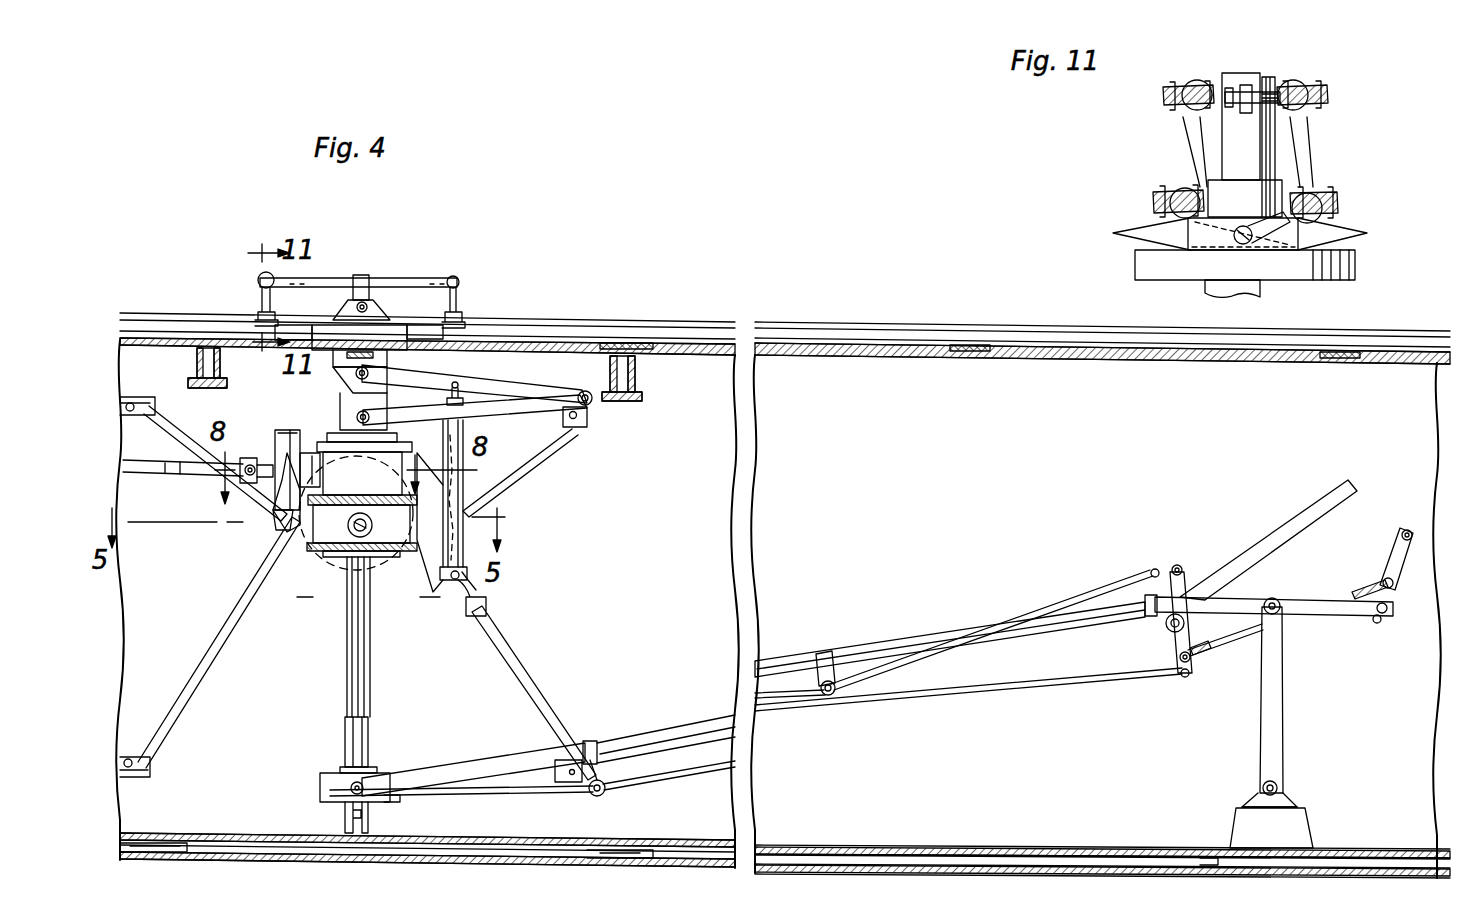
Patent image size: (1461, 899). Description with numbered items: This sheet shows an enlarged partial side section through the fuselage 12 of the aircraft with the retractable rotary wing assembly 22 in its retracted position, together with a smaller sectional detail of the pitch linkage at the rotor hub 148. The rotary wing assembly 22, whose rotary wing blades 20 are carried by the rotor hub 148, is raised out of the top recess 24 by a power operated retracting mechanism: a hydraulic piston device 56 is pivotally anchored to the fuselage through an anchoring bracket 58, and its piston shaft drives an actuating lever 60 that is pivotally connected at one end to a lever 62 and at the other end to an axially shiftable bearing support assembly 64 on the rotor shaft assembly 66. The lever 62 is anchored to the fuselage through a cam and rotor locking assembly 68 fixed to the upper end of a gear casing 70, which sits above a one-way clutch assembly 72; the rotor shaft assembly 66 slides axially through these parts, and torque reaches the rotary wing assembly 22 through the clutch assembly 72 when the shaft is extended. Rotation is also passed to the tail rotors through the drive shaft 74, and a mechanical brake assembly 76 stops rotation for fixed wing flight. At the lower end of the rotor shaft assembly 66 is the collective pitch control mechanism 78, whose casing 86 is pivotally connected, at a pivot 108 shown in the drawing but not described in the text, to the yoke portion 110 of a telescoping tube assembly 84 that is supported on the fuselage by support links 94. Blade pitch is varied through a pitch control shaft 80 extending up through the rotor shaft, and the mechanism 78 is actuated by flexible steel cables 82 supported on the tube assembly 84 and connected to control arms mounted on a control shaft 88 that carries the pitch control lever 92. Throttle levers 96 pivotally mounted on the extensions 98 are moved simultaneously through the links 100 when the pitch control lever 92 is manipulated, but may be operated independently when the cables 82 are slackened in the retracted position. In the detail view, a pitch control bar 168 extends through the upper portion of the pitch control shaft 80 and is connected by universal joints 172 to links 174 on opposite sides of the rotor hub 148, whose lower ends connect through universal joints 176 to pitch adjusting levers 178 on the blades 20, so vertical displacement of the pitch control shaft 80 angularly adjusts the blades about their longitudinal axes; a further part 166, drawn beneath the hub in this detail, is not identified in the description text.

In FIG. 4, the fuselage 12 is at (850, 343).
In FIG. 4, the rotary wing blades 20 is at (544, 323).
In FIG. 11, the rotary wing blades 20 is at (1332, 236).
In FIG. 4, the rotary wing assembly 22 is at (432, 270).
In FIG. 4, the top recess 24 is at (683, 323).
In FIG. 4, the hydraulic piston device 56 is at (458, 478).
In FIG. 4, the anchoring bracket 58 is at (427, 563).
In FIG. 4, the actuating lever 60 is at (505, 388).
In FIG. 4, the lever 62 is at (520, 403).
In FIG. 4, the bearing support assembly 64 is at (342, 372).
In FIG. 4, the rotor shaft assembly 66 is at (344, 654).
In FIG. 4, the cam and rotor locking assembly 68 is at (346, 412).
In FIG. 4, the gear casing 70 is at (347, 480).
In FIG. 4, the one-way clutch assembly 72 is at (340, 480).
In FIG. 4, the drive shaft 74 is at (186, 478).
In FIG. 4, the mechanical brake assembly 76 is at (282, 437).
In FIG. 4, the collective pitch control mechanism 78 is at (320, 782).
In FIG. 4, the pitch control shaft 80 is at (367, 290).
In FIG. 11, the pitch control shaft 80 is at (1248, 78).
In FIG. 4, the flexible steel cables 82 is at (495, 790).
In FIG. 4, the telescoping tube assembly 84 is at (697, 728).
In FIG. 4, the casing 86 is at (335, 790).
In FIG. 4, the control shaft 88 is at (1155, 633).
In FIG. 4, the pitch control lever 92 is at (1273, 538).
In FIG. 4, the support links 94 is at (1283, 692).
In FIG. 4, the throttle levers 96 is at (1397, 562).
In FIG. 4, the extensions 98 is at (1308, 603).
In FIG. 4, the links 100 is at (1235, 647).
In FIG. 4, the pivot pin 108 is at (366, 784).
In FIG. 4, the yoke portion 110 is at (455, 768).
In FIG. 11, the rotor hub 148 is at (1172, 232).
In FIG. 11, the base plate 166 is at (1352, 268).
In FIG. 11, the pitch control bar 168 is at (1258, 92).
In FIG. 11, the universal joints 172 is at (1322, 104).
In FIG. 11, the links 174 is at (1302, 140).
In FIG. 11, the universal joints 176 is at (1316, 192).
In FIG. 11, the pitch adjusting levers 178 is at (1270, 232).